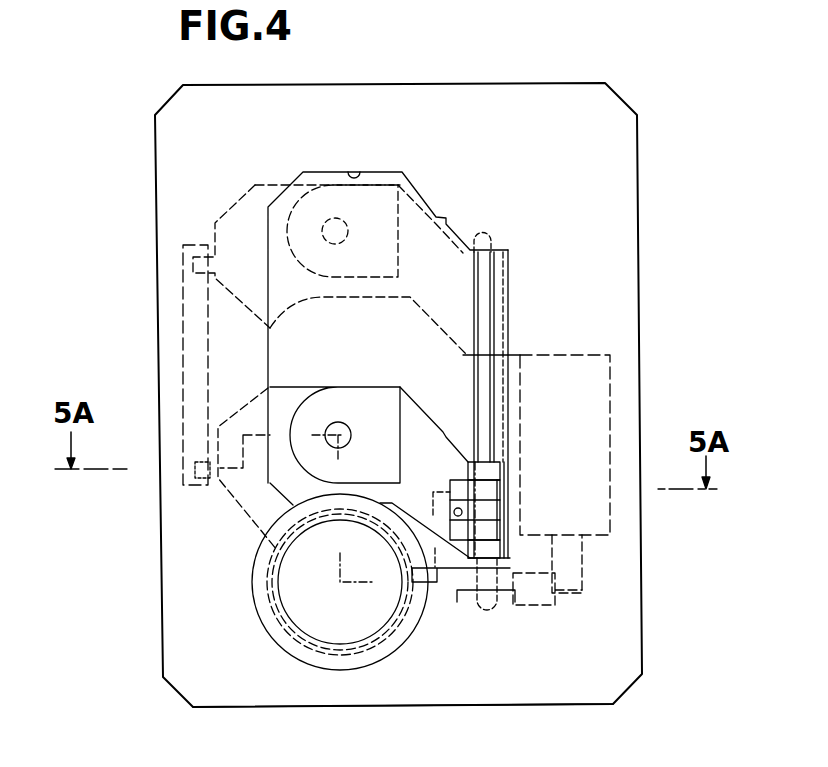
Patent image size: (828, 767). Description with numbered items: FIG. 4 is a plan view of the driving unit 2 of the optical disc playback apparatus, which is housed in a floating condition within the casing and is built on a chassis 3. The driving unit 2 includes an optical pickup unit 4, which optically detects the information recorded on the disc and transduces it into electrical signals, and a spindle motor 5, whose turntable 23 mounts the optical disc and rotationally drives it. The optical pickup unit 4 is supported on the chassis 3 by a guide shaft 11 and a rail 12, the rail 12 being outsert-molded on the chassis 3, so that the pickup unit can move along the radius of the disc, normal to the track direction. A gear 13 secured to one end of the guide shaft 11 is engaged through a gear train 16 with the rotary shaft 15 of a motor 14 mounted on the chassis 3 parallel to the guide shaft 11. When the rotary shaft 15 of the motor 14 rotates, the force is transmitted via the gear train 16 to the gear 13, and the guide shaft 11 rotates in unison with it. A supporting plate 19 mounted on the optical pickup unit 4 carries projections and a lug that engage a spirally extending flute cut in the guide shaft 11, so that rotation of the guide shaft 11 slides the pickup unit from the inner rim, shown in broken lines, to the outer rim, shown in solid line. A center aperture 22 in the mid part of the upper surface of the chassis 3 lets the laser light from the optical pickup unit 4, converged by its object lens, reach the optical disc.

The driving unit 2 is at (672, 78).
The chassis 3 is at (640, 178).
The optical pickup unit 4 is at (307, 408).
The spindle motor 5 is at (263, 685).
The guide shaft 11 is at (488, 292).
The rail 12 is at (190, 333).
The gear 13 is at (457, 603).
The motor 14 is at (610, 408).
The rotary shaft 15 is at (582, 550).
The gear train 16 is at (548, 636).
The supporting plate 19 is at (485, 562).
The center aperture 22 is at (358, 172).
The turntable 23 is at (347, 638).